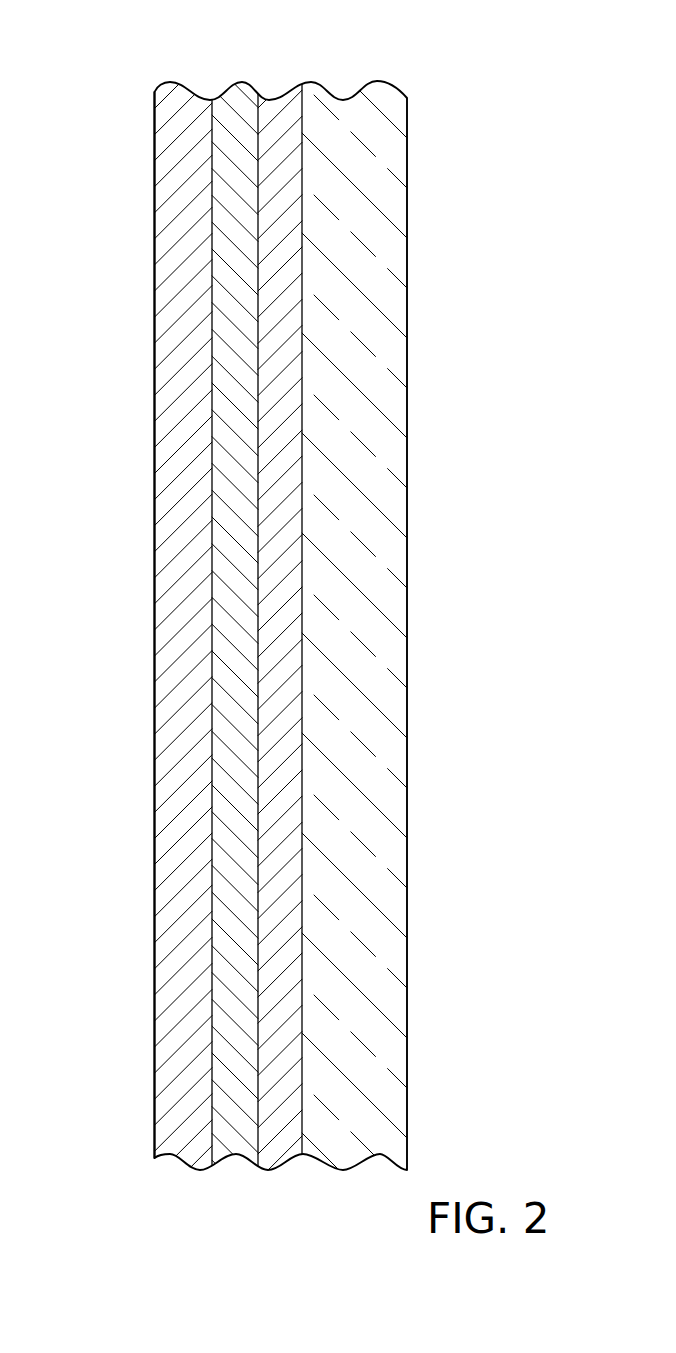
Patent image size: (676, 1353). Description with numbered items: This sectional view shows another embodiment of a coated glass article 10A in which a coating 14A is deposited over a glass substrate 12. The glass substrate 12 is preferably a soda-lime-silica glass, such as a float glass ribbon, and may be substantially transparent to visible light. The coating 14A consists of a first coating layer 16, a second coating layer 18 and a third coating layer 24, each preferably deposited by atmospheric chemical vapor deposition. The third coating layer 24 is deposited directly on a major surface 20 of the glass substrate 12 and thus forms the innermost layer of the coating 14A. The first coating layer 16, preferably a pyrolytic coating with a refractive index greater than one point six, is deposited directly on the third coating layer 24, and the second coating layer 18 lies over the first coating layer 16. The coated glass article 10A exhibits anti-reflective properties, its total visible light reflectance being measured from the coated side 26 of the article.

The coated glass article 10A is at (499, 182).
The glass substrate 12 is at (352, 1162).
The coating 14A is at (301, 1178).
The first coating layer 16 is at (235, 110).
The second coating layer 18 is at (192, 107).
The major surface 20 is at (302, 280).
The third coating layer 24 is at (277, 110).
The side 26 is at (155, 432).